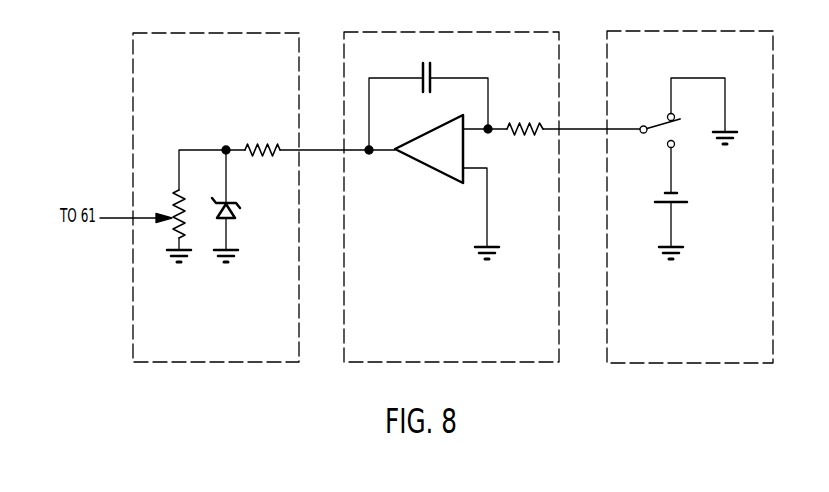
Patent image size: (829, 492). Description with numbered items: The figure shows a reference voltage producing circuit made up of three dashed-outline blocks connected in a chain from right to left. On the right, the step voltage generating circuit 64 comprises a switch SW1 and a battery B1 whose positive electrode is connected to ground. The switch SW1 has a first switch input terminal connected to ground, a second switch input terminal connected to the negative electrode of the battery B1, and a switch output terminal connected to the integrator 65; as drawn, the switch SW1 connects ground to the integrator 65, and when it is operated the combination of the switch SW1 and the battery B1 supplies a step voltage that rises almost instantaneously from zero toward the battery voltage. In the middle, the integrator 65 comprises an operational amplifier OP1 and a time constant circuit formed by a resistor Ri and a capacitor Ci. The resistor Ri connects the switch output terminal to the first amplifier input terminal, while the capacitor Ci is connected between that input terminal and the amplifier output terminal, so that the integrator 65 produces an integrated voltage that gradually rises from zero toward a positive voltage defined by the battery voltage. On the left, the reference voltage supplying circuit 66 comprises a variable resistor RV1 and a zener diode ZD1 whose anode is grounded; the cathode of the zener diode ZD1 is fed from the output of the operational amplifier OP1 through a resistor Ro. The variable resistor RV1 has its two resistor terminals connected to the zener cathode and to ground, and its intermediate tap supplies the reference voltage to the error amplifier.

The reference voltage supplying circuit 66 is at (180, 33).
The integrator 65 is at (392, 32).
The step voltage generating circuit 64 is at (638, 31).
The variable resistor RV1 is at (176, 198).
The zener diode ZD1 is at (238, 207).
The resistor Ro is at (268, 145).
The operational amplifier OP1 is at (446, 178).
The capacitor Ci is at (428, 64).
The resistor Ri is at (529, 127).
The switch SW1 is at (660, 118).
The battery B1 is at (683, 200).